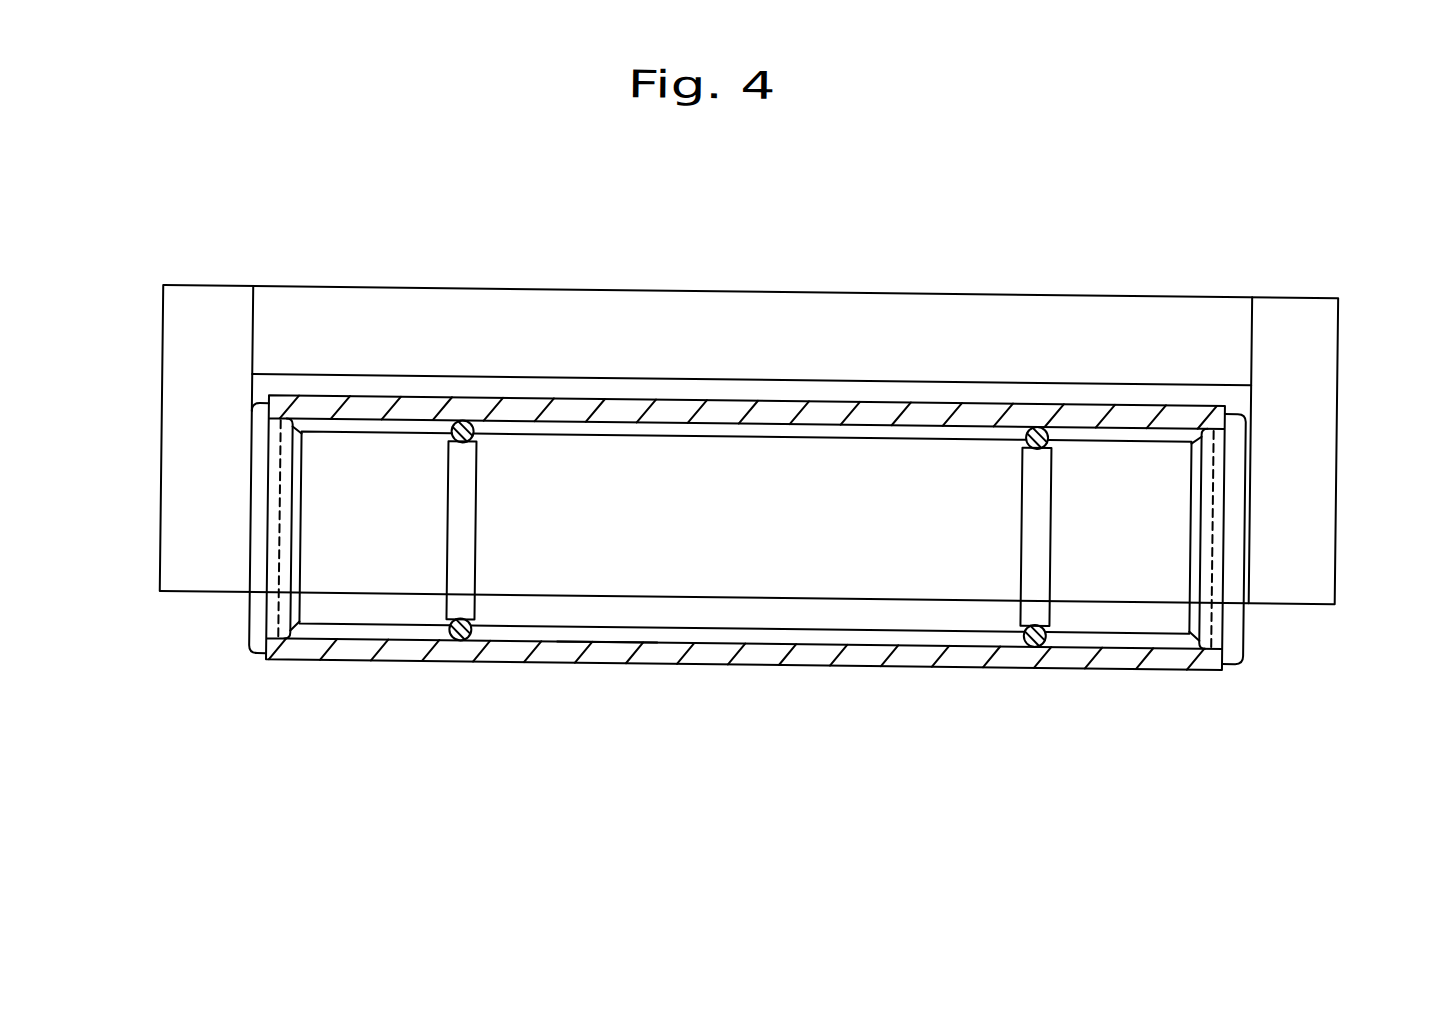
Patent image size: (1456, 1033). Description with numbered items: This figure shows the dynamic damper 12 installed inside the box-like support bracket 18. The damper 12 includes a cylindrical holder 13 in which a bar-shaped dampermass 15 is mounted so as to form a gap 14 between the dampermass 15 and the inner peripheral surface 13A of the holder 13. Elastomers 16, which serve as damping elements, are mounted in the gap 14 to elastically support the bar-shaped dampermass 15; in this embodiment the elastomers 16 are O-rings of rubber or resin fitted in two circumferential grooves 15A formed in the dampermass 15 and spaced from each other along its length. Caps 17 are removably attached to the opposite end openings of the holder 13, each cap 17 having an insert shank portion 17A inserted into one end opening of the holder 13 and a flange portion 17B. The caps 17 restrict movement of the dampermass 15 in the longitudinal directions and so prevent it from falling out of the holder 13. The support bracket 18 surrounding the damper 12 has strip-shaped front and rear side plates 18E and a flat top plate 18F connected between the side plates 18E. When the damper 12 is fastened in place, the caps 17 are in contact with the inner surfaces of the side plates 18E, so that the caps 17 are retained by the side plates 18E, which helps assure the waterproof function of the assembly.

The dynamic damper 12 is at (745, 522).
The cylindrical holder 13 is at (521, 661).
The inner peripheral surface 13A is at (610, 636).
The gap 14 is at (761, 632).
The bar-shaped dampermass 15 is at (771, 511).
The circumferential grooves 15A is at (771, 511).
The elastomers 16 is at (462, 416).
The caps 17 is at (766, 598).
The insert shank portion 17A is at (732, 600).
The flange portion 17B is at (252, 635).
The support bracket 18 is at (756, 412).
The side plates 18E is at (178, 524).
The top plate 18F is at (716, 310).